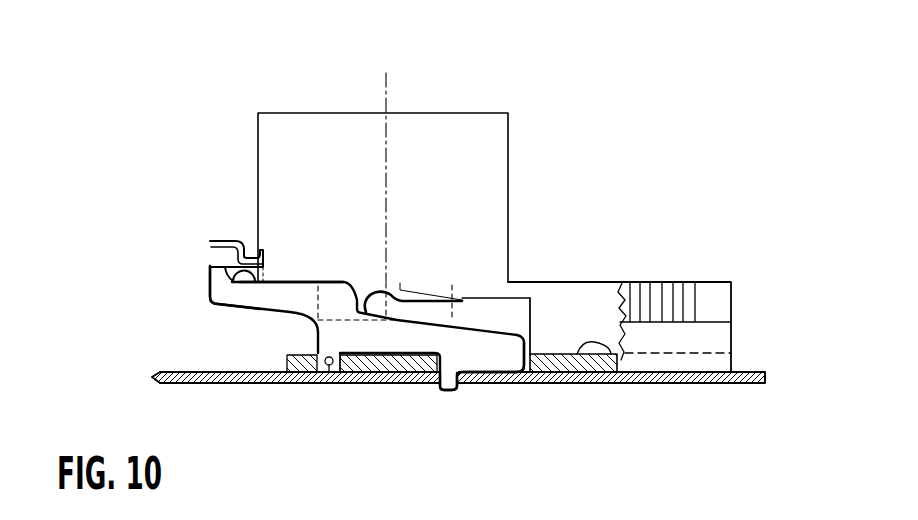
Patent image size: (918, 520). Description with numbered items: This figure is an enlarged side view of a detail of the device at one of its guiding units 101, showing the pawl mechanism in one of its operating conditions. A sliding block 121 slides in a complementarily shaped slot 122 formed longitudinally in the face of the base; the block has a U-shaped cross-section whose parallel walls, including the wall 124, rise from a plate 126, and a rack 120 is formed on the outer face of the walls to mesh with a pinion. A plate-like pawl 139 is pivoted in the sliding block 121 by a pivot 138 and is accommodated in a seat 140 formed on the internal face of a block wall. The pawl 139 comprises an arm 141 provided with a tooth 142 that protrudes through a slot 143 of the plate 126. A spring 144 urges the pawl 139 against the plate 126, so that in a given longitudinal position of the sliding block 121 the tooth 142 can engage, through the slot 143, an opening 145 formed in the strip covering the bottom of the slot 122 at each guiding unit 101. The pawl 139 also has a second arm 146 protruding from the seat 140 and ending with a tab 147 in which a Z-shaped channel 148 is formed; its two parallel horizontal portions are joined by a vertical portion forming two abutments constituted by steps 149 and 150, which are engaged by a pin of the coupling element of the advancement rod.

The guiding unit 101 is at (512, 125).
The rack 120 is at (657, 300).
The sliding block 121 is at (581, 269).
The slot 122 is at (609, 358).
The wall 124 is at (674, 340).
The plate 126 is at (580, 356).
The pivot 138 is at (321, 377).
The pawl 139 is at (351, 273).
The seat 140 is at (513, 302).
The arm 141 is at (495, 352).
The tooth 142 is at (438, 393).
The slot 143 is at (524, 366).
The spring 144 is at (417, 302).
The opening 145 is at (454, 391).
The second arm 146 is at (288, 292).
The tab 147 is at (212, 292).
The channel 148 is at (226, 254).
The step 149 is at (208, 249).
The step 150 is at (245, 278).